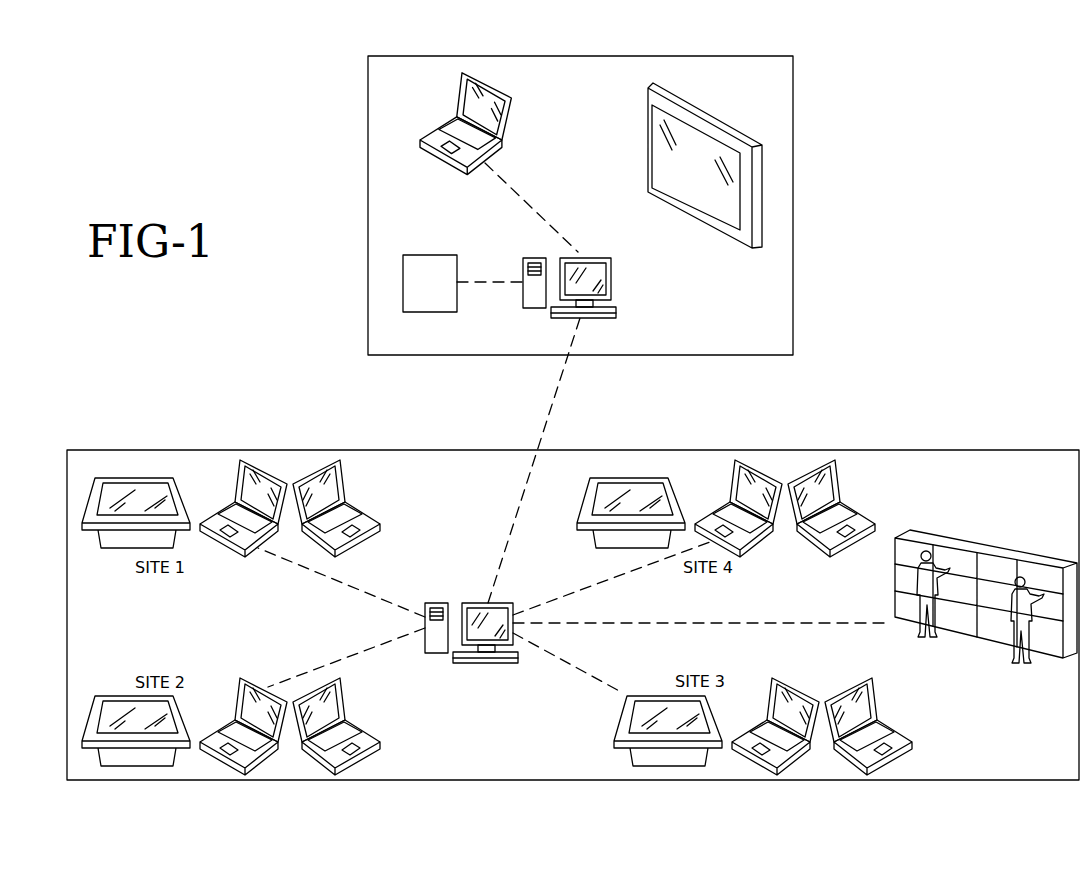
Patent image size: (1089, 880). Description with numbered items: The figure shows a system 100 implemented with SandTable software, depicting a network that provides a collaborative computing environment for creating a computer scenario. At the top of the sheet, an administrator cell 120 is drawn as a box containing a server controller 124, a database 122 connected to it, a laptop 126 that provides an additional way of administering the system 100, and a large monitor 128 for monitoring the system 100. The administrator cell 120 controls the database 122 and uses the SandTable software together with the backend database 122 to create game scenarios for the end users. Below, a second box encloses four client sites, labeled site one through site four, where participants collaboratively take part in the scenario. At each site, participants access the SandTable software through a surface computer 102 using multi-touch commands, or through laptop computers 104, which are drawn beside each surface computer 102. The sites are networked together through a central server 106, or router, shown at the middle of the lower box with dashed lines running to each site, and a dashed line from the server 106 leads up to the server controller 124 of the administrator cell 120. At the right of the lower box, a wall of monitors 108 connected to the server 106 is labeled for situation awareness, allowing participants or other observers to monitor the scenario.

The system 100 is at (930, 170).
The surface computer 102 is at (118, 540).
The laptop computer 104 is at (223, 540).
The server 106 is at (485, 665).
The monitor 108 is at (997, 545).
The administrator cell 120 is at (792, 192).
The database 122 is at (428, 255).
The server controller 124 is at (595, 254).
The laptop 126 is at (457, 100).
The monitor 128 is at (705, 202).